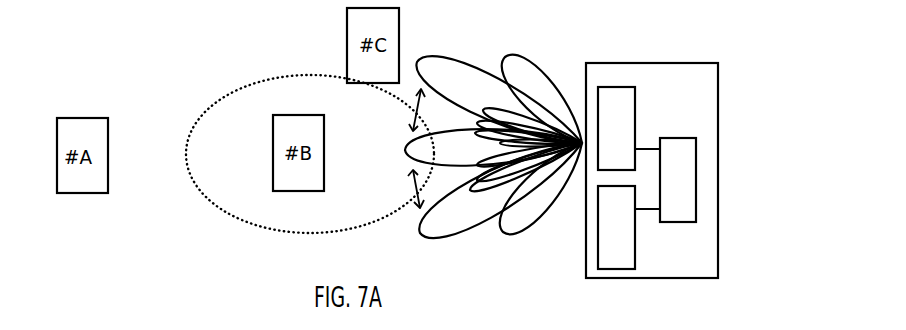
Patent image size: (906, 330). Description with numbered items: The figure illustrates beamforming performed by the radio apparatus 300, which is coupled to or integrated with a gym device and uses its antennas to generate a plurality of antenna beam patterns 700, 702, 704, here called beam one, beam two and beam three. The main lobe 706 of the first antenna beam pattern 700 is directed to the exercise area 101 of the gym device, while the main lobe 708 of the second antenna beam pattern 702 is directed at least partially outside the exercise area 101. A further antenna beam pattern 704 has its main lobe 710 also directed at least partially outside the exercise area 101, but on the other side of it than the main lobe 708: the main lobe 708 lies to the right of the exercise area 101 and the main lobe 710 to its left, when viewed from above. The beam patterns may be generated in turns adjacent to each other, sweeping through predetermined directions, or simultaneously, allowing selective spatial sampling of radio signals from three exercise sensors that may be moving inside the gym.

The exercise area 101 is at (261, 80).
The radio apparatus 300 is at (718, 118).
The first antenna beam pattern 700 is at (410, 148).
The second antenna beam pattern 702 is at (508, 57).
The third antenna beam pattern 704 is at (500, 238).
The main lobe of first antenna beam pattern 706 is at (463, 160).
The main lobe of second antenna beam pattern 708 is at (463, 86).
The main lobe of third antenna beam pattern 710 is at (472, 225).